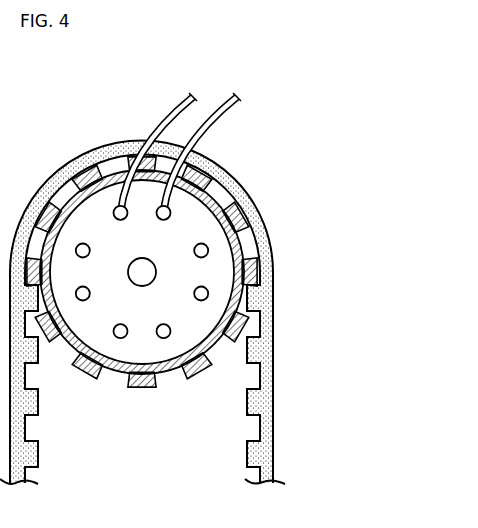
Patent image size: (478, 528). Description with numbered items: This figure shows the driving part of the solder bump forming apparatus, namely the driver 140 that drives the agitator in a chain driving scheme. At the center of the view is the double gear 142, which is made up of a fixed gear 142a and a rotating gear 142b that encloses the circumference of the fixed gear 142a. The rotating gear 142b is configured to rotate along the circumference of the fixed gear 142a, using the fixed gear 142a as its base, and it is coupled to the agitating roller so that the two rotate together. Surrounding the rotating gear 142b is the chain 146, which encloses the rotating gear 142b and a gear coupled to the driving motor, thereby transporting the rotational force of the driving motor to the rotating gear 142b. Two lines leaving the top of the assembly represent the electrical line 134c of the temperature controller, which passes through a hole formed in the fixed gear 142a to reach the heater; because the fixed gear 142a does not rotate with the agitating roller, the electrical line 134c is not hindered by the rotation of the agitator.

The electrical line 134c is at (165, 122).
The driver 140 is at (189, 312).
The double gear 142 is at (236, 272).
The fixed gear 142a is at (234, 290).
The rotating gear 142b is at (258, 266).
The chain 146 is at (272, 397).